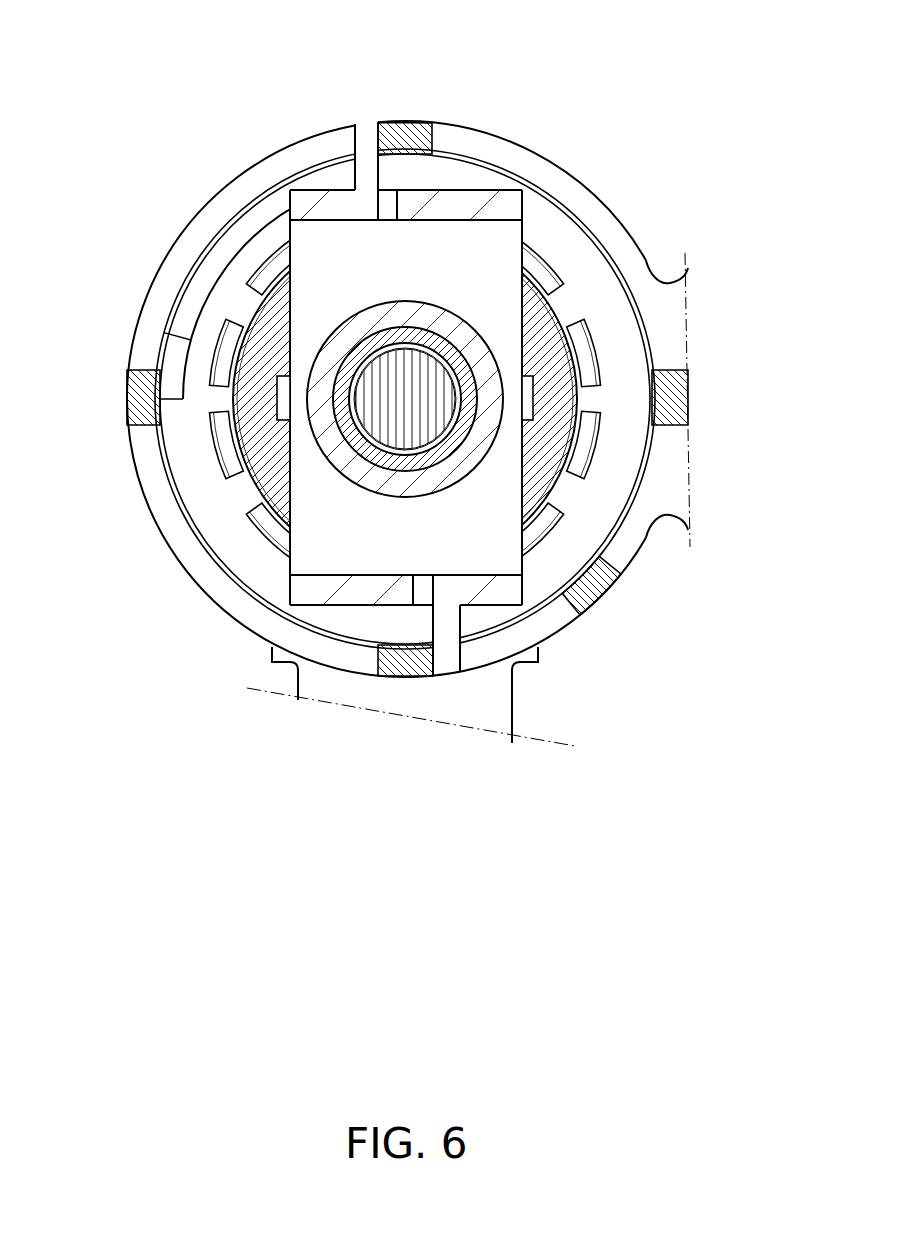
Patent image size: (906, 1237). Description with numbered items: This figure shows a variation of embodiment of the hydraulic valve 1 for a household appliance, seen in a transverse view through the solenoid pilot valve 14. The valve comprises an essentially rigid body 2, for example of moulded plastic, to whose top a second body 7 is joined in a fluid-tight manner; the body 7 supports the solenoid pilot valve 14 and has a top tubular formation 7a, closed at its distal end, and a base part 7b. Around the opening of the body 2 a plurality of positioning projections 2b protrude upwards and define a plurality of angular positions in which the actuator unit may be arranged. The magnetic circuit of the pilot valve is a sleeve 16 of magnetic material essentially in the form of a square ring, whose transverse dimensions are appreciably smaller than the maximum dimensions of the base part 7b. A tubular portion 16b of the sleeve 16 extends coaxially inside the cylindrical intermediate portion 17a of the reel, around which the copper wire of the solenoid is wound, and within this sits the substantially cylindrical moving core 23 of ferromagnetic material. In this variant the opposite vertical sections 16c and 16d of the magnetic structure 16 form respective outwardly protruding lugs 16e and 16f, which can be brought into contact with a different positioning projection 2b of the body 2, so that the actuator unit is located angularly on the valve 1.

The hydraulic valve 1 is at (604, 126).
The body 2 is at (463, 373).
The positioning projections 2b is at (393, 127).
The second body 7 is at (192, 260).
The top tubular formation 7a is at (440, 302).
The base part 7b is at (627, 330).
The solenoid pilot valve 14 is at (232, 513).
The sleeve 16 is at (442, 398).
The tubular portion 16b is at (390, 325).
The vertical section 16c is at (455, 180).
The vertical section 16d is at (353, 595).
The lug 16e is at (366, 136).
The lug 16f is at (452, 660).
The cylindrical intermediate portion 17a is at (462, 343).
The moving core 23 is at (432, 432).